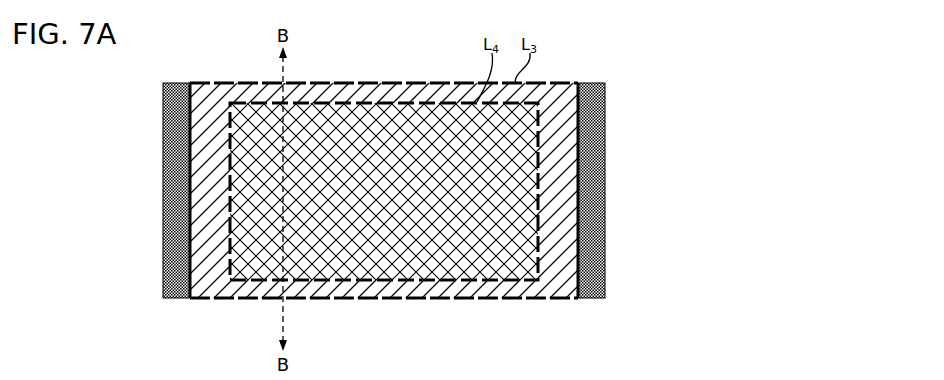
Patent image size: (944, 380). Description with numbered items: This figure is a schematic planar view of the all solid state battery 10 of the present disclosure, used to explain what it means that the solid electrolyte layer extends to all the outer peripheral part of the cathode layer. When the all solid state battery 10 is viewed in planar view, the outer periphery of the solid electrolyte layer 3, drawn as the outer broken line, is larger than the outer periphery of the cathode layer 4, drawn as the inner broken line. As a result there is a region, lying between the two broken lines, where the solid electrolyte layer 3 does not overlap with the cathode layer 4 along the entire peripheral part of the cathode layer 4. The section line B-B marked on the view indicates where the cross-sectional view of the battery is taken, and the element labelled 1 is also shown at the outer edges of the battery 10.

The all solid state battery 10 is at (415, 160).
The external electrode 1 is at (590, 155).
The solid electrolyte layer 3 is at (582, 133).
The cathode layer 4 is at (578, 105).